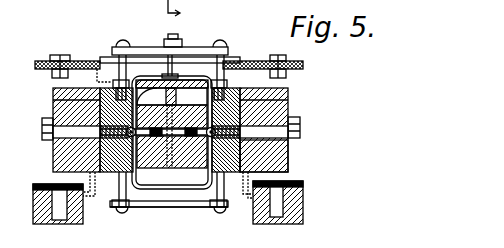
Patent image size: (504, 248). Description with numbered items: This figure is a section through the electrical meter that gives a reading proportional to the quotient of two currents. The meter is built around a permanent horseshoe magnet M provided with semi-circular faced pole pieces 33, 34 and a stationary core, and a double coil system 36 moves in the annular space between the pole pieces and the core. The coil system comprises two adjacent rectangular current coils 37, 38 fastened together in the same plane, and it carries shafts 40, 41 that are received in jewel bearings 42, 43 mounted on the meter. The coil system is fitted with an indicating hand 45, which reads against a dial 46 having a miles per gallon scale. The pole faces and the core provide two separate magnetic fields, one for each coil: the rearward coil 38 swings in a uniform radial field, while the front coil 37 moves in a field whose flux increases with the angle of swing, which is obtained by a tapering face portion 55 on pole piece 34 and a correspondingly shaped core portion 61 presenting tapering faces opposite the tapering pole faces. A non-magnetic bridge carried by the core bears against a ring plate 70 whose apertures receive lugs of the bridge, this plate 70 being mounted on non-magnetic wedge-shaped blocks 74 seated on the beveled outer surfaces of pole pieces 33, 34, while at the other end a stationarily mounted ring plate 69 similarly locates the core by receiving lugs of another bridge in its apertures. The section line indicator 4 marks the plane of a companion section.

The section line indicator 4 is at (159, 11).
The dial 46 is at (43, 62).
The indicating hand 45 is at (152, 62).
The shaft 40 is at (168, 62).
The jewel bearing 42 is at (178, 50).
The front current coil 37 is at (193, 77).
The ring plate 70 is at (236, 86).
The core portion 61 is at (178, 104).
The rearward current coil 38 is at (193, 161).
The pole piece 33 is at (62, 117).
The pole piece 34 is at (290, 108).
The wedge-shaped blocks 74 is at (77, 100).
The permanent horseshoe magnet M is at (288, 161).
The double coil system 36 is at (122, 189).
The shaft 41 is at (148, 205).
The jewel bearing 43 is at (167, 205).
The tapering face portion 55 is at (216, 205).
The ring plate 69 is at (236, 178).